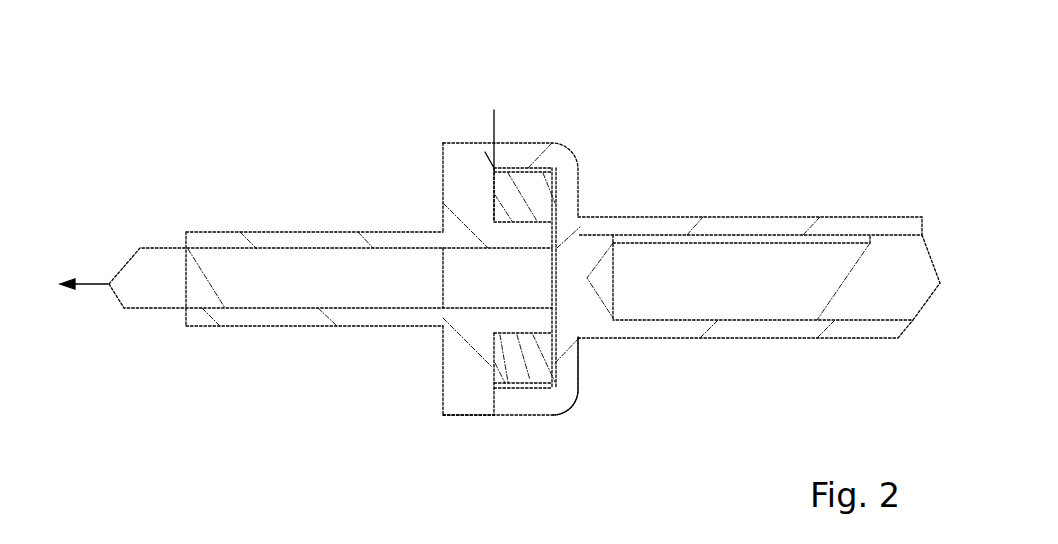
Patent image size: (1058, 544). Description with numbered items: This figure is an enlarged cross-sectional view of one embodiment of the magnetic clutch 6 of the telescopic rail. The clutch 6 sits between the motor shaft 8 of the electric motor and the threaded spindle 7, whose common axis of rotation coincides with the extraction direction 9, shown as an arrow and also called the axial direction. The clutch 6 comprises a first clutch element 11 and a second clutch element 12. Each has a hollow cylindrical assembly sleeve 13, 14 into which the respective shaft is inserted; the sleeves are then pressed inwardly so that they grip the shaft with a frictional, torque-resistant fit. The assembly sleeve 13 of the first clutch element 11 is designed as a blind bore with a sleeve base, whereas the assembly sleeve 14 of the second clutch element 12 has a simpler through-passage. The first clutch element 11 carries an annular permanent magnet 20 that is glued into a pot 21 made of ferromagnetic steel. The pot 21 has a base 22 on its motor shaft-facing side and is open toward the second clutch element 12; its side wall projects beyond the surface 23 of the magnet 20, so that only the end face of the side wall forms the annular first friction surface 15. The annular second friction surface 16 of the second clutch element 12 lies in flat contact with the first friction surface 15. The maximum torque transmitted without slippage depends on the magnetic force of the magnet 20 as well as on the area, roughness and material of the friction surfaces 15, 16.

The magnetic clutch 6 is at (512, 111).
The threaded spindle 7 is at (254, 272).
The motor shaft 8 is at (744, 273).
The extraction direction 9 is at (90, 283).
The first clutch element 11 is at (557, 410).
The second clutch element 12 is at (457, 393).
The assembly sleeve 13 is at (842, 225).
The assembly sleeve 14 is at (275, 315).
The first friction surface 15 is at (482, 405).
The second friction surface 16 is at (513, 157).
The permanent magnet 20 is at (527, 195).
The pot 21 is at (524, 407).
The base 22 is at (556, 197).
The surface 23 is at (475, 183).